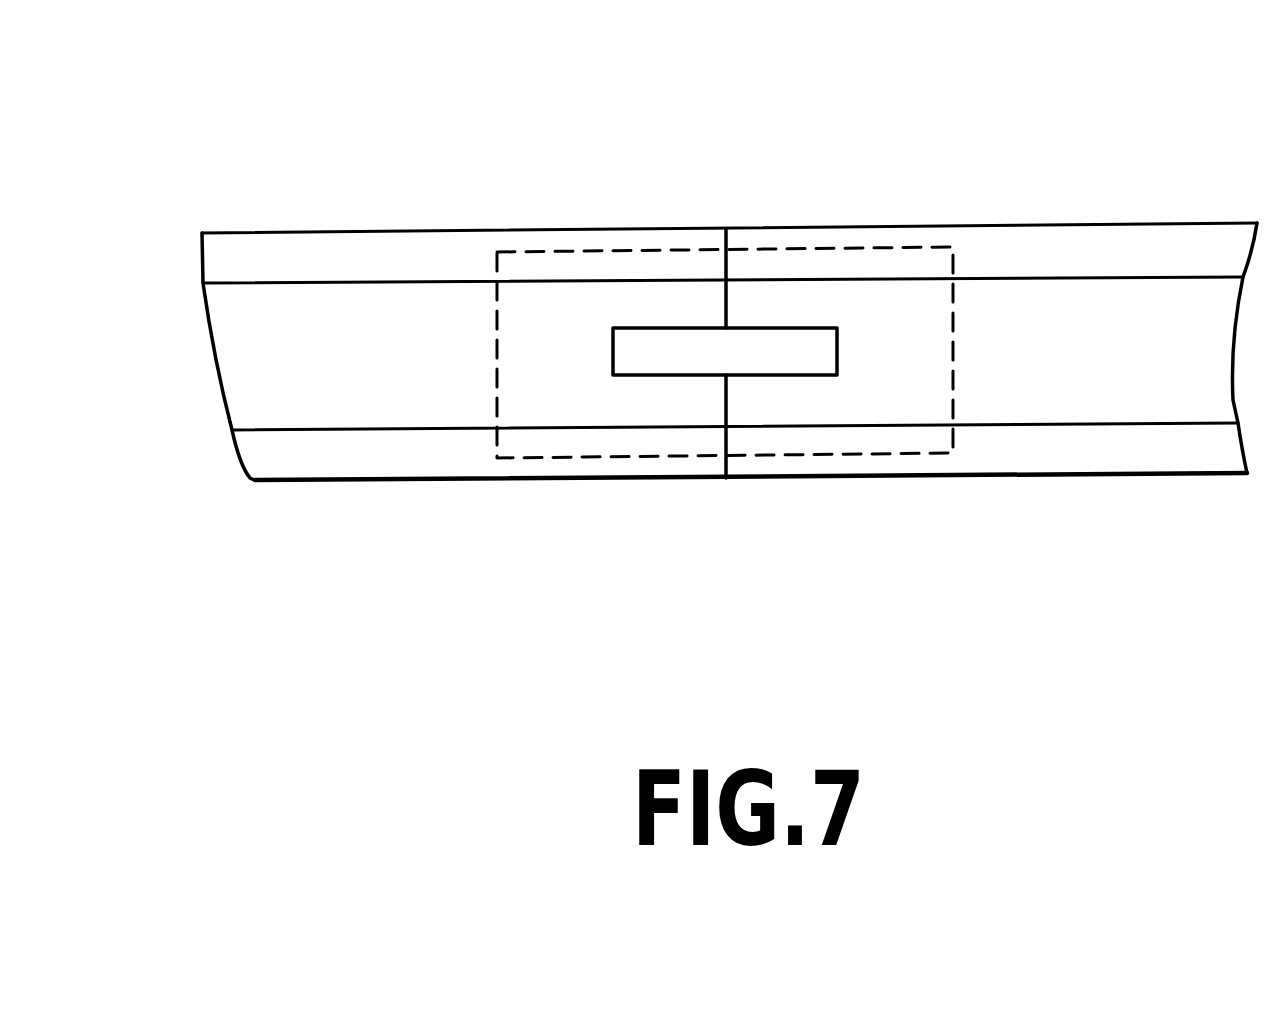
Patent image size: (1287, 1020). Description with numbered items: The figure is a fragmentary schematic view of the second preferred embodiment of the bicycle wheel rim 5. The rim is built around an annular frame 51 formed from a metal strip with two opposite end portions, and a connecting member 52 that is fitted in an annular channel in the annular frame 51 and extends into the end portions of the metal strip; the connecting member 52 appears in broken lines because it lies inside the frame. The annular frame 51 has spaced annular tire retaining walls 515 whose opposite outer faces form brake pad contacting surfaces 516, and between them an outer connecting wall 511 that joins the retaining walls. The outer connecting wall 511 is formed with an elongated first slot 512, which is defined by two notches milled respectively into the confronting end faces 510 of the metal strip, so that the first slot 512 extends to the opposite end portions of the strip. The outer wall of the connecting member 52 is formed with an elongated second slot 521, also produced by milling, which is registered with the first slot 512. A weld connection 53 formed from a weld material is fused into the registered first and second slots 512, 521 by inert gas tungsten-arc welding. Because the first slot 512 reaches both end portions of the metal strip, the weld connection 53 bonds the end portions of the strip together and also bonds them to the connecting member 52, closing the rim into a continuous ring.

The bicycle wheel rim 5 is at (929, 212).
The annular frame 51 is at (1168, 218).
The confronting end faces 510 is at (726, 271).
The outer connecting wall 511 is at (1103, 388).
The first slot 512 is at (645, 378).
The second slot 521 is at (645, 508).
The annular tire retaining walls 515 is at (267, 258).
The brake pad contacting surfaces 516 is at (408, 232).
The connecting member 52 is at (953, 348).
The weld connection 53 is at (777, 353).